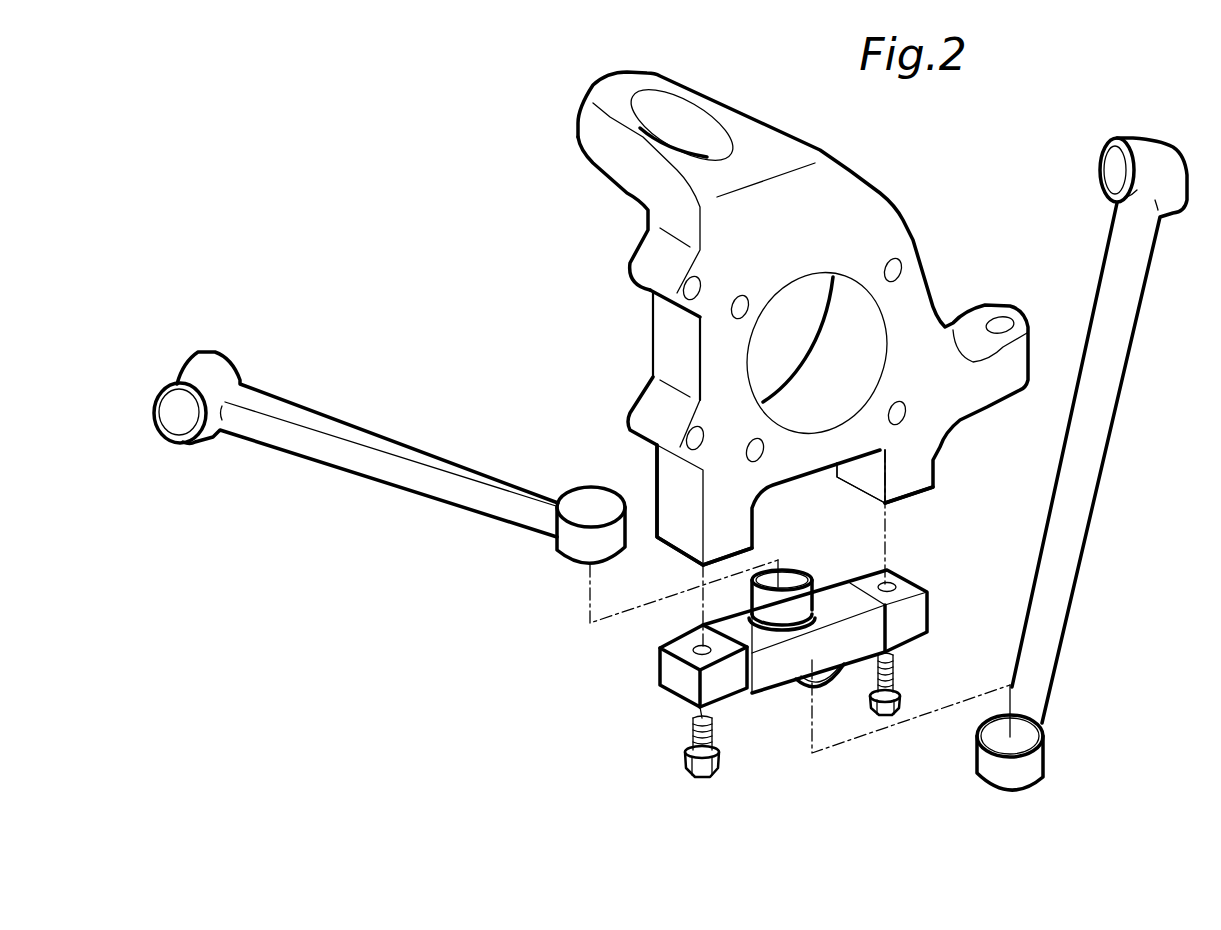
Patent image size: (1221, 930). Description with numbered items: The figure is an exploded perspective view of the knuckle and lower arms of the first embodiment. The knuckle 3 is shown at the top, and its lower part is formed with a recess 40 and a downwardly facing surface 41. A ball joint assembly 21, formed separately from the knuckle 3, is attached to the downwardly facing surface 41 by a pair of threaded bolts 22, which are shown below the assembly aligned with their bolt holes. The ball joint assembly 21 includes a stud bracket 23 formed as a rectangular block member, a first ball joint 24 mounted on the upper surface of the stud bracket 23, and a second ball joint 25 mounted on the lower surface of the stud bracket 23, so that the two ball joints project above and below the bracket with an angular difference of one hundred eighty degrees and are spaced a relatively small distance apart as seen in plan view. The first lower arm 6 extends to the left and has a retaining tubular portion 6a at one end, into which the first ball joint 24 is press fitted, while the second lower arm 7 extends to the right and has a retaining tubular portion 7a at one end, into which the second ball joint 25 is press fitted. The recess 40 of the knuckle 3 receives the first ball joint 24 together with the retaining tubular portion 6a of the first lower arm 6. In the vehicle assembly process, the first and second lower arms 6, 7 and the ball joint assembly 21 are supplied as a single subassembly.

The knuckle 3 is at (880, 203).
The first lower arm 6 is at (407, 446).
The retaining tubular portion 6a is at (597, 493).
The second lower arm 7 is at (1080, 550).
The retaining tubular portion 7a is at (1028, 785).
The ball joint assembly 21 is at (780, 676).
The threaded bolts 22 is at (900, 703).
The stud bracket 23 is at (838, 580).
The first ball joint 24 is at (789, 571).
The second ball joint 25 is at (802, 693).
The recess 40 is at (797, 502).
The downwardly facing surface 41 is at (680, 551).